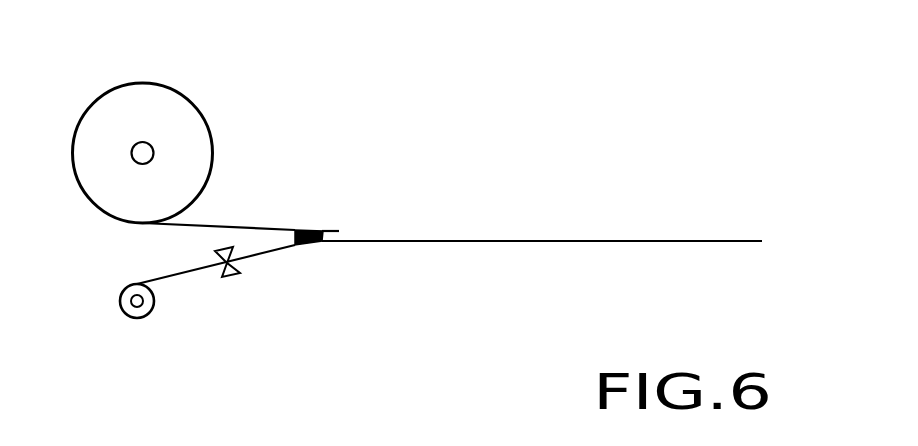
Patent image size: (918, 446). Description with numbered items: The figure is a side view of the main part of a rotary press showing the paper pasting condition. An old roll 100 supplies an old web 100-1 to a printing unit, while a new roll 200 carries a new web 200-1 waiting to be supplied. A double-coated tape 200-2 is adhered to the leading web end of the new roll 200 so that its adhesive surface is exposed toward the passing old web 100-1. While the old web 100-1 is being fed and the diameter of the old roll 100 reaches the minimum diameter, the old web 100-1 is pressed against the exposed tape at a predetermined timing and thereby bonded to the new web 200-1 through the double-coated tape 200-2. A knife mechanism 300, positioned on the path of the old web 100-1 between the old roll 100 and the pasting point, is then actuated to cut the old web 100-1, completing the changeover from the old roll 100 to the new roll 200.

The new roll 200 is at (180, 93).
The new web 200-1 is at (254, 228).
The double-coated tape 200-2 is at (310, 229).
The old web 100-1 is at (532, 240).
The old roll 100 is at (137, 318).
The knife mechanism 300 is at (231, 279).